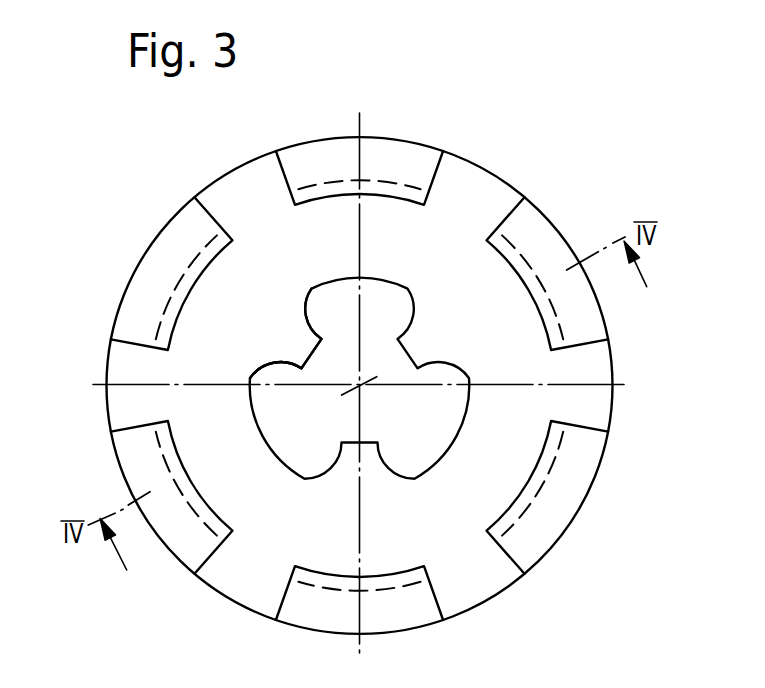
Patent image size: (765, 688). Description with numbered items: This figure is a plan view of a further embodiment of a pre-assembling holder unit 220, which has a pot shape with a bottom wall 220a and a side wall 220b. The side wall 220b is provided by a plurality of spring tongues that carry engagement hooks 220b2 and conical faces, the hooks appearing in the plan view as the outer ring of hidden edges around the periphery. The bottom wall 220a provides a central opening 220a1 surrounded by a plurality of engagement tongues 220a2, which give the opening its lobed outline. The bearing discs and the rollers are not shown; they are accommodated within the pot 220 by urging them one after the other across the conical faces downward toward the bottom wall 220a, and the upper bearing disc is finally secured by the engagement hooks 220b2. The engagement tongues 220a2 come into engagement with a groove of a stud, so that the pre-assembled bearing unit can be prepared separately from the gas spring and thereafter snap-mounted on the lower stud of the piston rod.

The pre-assembling holder unit 220 is at (588, 403).
The bottom wall 220a is at (438, 260).
The central opening 220a1 is at (330, 367).
The engagement tongues 220a2 is at (277, 349).
The side wall 220b is at (535, 230).
The engagement hooks 220b2 is at (347, 188).